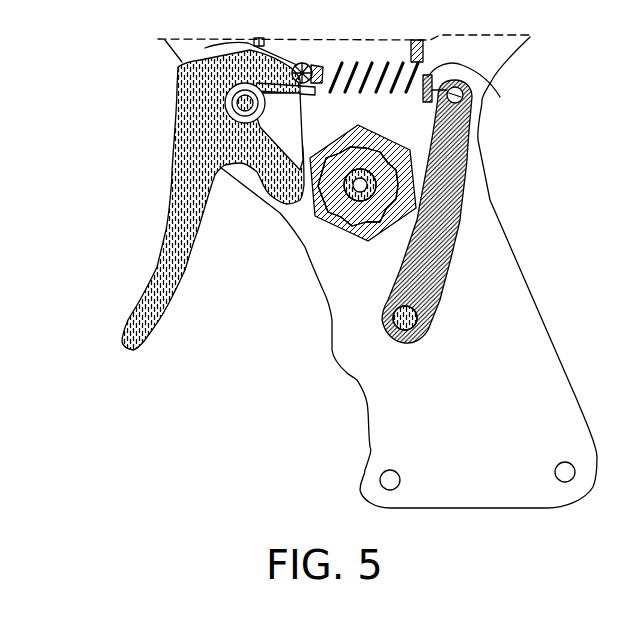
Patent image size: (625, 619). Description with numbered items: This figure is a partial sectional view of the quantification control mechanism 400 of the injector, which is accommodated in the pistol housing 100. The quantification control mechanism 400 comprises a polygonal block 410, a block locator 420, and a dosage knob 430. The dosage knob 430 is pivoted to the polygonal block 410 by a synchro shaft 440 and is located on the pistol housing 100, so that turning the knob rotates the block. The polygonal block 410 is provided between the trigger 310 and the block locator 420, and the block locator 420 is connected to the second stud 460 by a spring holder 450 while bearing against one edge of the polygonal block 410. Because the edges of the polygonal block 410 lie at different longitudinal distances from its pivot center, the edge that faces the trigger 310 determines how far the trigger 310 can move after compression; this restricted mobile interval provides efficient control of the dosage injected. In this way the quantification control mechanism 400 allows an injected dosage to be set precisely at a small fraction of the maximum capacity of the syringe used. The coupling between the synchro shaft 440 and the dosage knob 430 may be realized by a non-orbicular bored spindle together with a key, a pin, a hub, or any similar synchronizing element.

The pistol housing 100 is at (545, 357).
The trigger 310 is at (158, 322).
The quantification control mechanism 400 is at (98, 63).
The polygonal block 410 is at (330, 220).
The block locator 420 is at (445, 277).
The dosage knob 430 is at (330, 218).
The synchro shaft 440 is at (338, 225).
The spring holder 450 is at (500, 97).
The second stud 460 is at (182, 60).